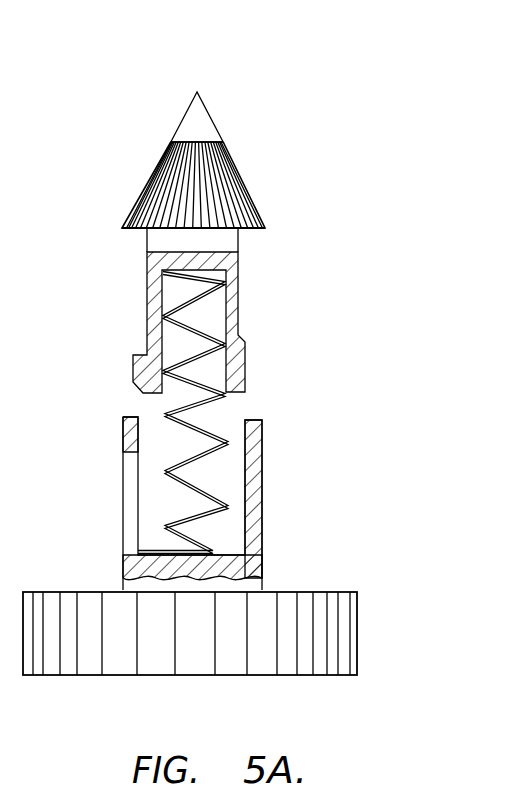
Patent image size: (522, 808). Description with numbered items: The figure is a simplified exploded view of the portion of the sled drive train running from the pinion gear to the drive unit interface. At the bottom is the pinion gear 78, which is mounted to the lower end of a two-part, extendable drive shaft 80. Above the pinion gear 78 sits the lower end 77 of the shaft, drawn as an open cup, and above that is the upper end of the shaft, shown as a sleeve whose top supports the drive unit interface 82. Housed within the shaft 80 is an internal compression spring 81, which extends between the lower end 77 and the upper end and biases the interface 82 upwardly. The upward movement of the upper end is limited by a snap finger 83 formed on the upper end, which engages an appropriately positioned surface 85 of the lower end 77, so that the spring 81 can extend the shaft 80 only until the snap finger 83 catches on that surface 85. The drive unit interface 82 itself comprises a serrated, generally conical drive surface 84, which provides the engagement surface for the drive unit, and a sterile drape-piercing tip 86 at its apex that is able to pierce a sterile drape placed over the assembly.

The lower end 77 is at (262, 478).
The pinion gear 78 is at (357, 632).
The drive shaft 80 is at (100, 352).
The internal compression spring 81 is at (207, 432).
The drive unit interface 82 is at (254, 163).
The snap finger 83 is at (147, 333).
The serrated, generally conical drive surface 84 is at (158, 178).
The surface 85 is at (130, 452).
The sterile drape-piercing tip 86 is at (197, 92).